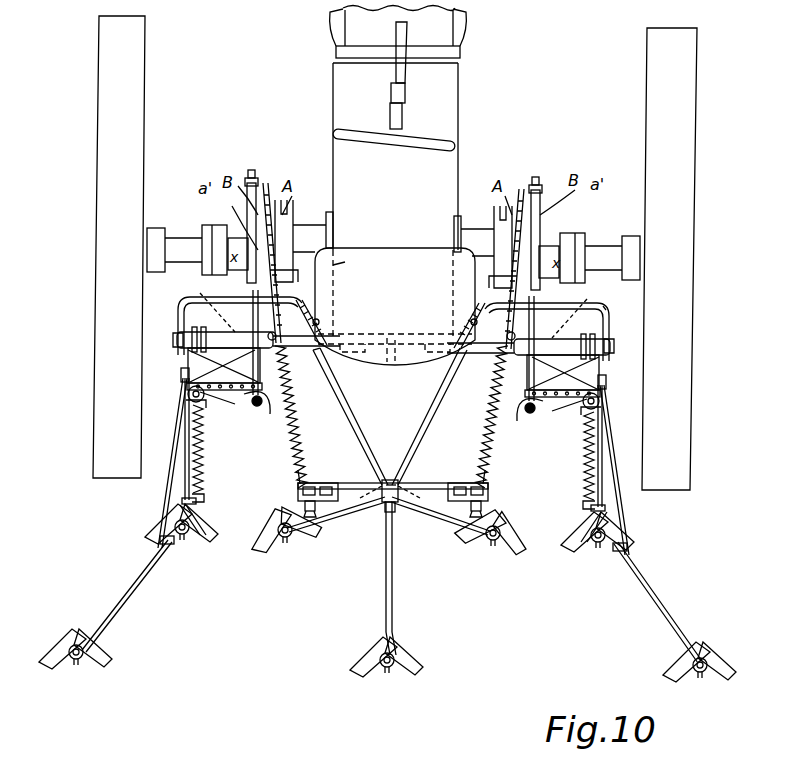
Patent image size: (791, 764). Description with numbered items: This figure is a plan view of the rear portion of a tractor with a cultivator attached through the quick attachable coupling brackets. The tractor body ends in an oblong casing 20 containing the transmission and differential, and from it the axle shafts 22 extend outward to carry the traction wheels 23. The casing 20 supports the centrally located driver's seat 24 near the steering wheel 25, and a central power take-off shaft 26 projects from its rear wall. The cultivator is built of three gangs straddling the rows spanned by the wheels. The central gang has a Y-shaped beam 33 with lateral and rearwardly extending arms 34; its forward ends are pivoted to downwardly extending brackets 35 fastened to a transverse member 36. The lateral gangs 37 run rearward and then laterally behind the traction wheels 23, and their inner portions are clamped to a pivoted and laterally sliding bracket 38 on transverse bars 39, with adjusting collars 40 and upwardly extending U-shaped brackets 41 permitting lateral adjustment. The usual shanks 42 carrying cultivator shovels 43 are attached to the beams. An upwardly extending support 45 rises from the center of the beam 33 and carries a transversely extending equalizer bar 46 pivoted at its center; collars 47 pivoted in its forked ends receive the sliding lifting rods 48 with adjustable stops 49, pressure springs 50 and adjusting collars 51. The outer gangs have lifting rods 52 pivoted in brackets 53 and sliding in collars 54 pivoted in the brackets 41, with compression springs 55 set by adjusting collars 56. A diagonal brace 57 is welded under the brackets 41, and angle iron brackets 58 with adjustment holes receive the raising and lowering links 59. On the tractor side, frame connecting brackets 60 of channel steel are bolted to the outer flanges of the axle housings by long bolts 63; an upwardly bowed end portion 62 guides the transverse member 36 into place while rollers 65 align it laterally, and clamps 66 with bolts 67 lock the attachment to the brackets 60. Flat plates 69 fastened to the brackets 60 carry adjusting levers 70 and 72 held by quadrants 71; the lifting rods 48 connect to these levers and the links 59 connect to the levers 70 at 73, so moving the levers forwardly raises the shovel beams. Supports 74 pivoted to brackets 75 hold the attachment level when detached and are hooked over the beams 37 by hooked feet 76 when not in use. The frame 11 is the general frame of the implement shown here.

The frame 11 is at (408, 438).
The oblong casing 20 is at (455, 70).
The axle shafts 22 is at (175, 245).
The traction wheels 23 is at (148, 48).
The driver's seat 24 is at (305, 228).
The steering wheel 25 is at (436, 140).
The power take-off shaft 26 is at (410, 368).
The Y-shaped beam 33 is at (428, 420).
The lateral and rearwardly extending arms 34 is at (330, 520).
The downwardly extending brackets 35 is at (475, 292).
The transverse member 36 is at (606, 306).
The lateral gangs 37 is at (130, 590).
The pivoted and laterally sliding bracket 38 is at (180, 302).
The transverse bars 39 is at (190, 340).
The adjusting collars 40 is at (175, 334).
The U-shaped brackets 41 is at (210, 405).
The shanks 42 is at (72, 644).
The cultivator shovels 43 is at (98, 648).
The upwardly extending support 45 is at (395, 512).
The equalizer bar 46 is at (412, 482).
The collars 47 is at (314, 483).
The lifting rods 48 is at (294, 444).
The adjustable stops 49 is at (310, 500).
The pressure springs 50 is at (292, 418).
The collars 51 is at (310, 378).
The lifting rods 52 is at (187, 391).
The brackets 53 is at (200, 510).
The collars 54 is at (186, 402).
The compression springs 55 is at (204, 450).
The adjusting collars 56 is at (205, 494).
The diagonal brace 57 is at (393, 369).
The angle iron brackets 58 is at (205, 392).
The raising and lowering links 59 is at (393, 408).
The frame connecting brackets 60 is at (252, 282).
The upwardly bowed end portion 62 is at (250, 334).
The long bolts 63 is at (252, 178).
The rollers 65 is at (392, 302).
The clamps 66 is at (393, 311).
The bolts 67 is at (472, 322).
The flat plates 69 is at (247, 208).
The adjusting levers 70 is at (240, 240).
The quadrants 71 is at (270, 185).
The adjusting lever 72 is at (215, 245).
The pivot connection 73 is at (390, 268).
The supports 74 is at (175, 436).
The brackets 75 is at (181, 372).
The hooked feet 76 is at (168, 545).